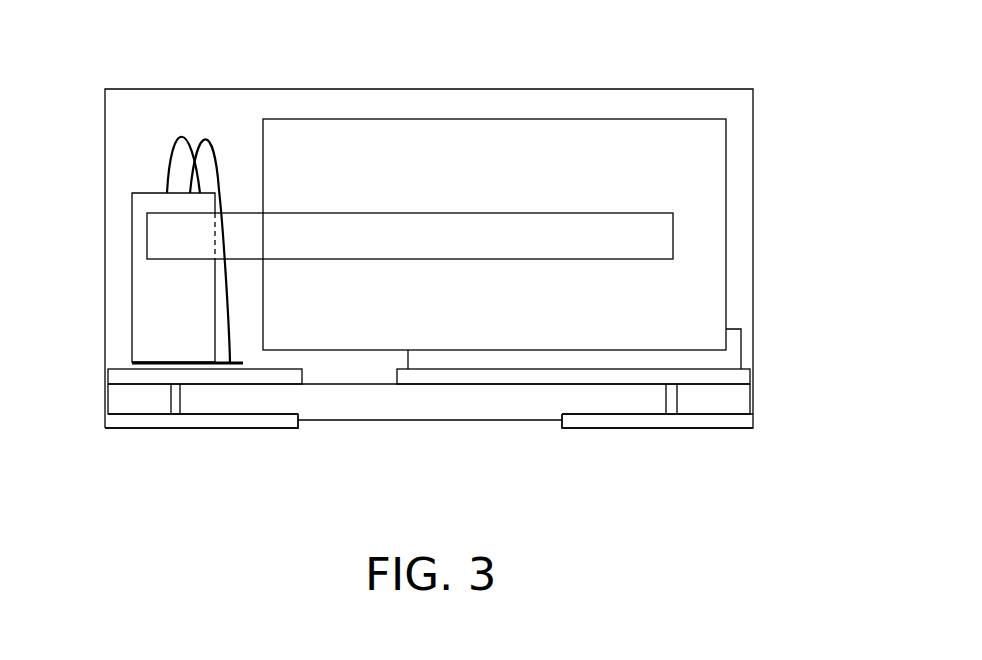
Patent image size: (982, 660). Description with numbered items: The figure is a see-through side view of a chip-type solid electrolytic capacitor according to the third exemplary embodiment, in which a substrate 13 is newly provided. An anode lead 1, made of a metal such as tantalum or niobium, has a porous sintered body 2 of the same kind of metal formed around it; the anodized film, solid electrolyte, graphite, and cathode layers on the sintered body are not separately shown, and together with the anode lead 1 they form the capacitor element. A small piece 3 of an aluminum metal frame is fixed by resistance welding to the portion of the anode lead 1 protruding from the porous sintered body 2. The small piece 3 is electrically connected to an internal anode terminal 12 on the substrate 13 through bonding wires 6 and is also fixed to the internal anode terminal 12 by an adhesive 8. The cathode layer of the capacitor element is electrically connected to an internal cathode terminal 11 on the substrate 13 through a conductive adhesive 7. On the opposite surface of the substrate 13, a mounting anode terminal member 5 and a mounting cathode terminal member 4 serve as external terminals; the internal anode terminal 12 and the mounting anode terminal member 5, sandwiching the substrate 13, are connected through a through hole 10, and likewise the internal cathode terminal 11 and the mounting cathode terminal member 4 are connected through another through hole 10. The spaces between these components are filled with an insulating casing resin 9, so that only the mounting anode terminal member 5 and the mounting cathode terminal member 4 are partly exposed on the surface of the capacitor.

The anode lead 1 is at (583, 222).
The porous sintered body 2 is at (718, 222).
The small piece of metal frame 3 is at (138, 303).
The mounting cathode terminal member 4 is at (712, 422).
The mounting anode terminal member 5 is at (145, 421).
The bonding wires 6 is at (167, 175).
The conductive adhesive 7 is at (733, 350).
The adhesive 8 is at (133, 363).
The insulating casing resin 9 is at (742, 127).
The through hole 10 is at (178, 407).
The internal cathode terminal 11 is at (743, 375).
The internal anode terminal 12 is at (113, 380).
The substrate 13 is at (530, 408).